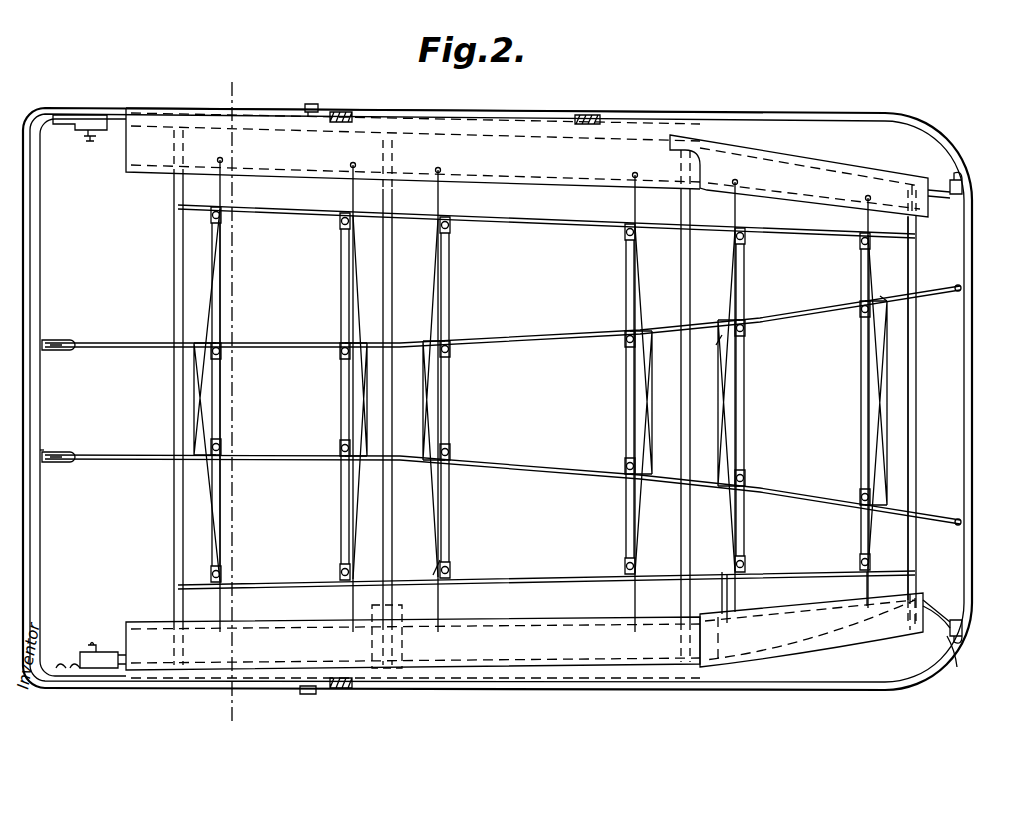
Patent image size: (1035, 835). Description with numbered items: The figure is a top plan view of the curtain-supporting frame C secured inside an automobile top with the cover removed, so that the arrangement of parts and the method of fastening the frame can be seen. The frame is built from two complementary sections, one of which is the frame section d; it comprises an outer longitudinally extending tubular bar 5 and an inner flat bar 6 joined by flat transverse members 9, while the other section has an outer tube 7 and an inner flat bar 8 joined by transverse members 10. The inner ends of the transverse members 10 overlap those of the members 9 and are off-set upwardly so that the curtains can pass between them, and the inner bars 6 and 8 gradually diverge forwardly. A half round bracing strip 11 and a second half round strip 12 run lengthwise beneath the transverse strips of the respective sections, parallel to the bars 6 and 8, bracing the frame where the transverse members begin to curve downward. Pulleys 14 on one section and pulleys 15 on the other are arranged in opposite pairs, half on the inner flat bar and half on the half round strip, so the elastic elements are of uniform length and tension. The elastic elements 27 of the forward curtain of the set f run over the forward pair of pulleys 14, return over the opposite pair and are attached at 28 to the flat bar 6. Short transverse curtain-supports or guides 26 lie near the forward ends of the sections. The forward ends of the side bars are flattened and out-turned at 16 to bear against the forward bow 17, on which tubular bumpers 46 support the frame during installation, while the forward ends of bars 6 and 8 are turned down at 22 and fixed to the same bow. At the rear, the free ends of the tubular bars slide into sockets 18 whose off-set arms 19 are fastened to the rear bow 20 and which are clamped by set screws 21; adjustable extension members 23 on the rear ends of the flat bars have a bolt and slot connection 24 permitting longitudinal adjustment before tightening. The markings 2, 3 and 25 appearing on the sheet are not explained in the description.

The frame top rail 2 is at (612, 150).
The section line 3 is at (262, 80).
The outer tubular bar 5 is at (866, 640).
The inner flat bar 6 is at (822, 312).
The outer tube 7 is at (940, 190).
The inner flat bar 8 is at (796, 500).
The transverse members 9 is at (174, 490).
The transverse members 10 is at (174, 296).
The half round bracing strip 11 is at (508, 584).
The half round bracing strip 12 is at (552, 222).
The pulleys 14 is at (450, 355).
The pulleys 15 is at (450, 230).
The out-turned bearing ends 16 is at (962, 170).
The forward bow 17 is at (966, 247).
The sockets 18 is at (96, 652).
The off-set arms 19 is at (68, 680).
The rear bow 20 is at (34, 243).
The set screws 21 is at (88, 648).
The turned-down ends 22 is at (955, 296).
The adjustable extension members 23 is at (44, 449).
The bolt and slot connection 24 is at (60, 350).
The rail end hook 25 is at (42, 459).
The curtain-supports or guides 26 is at (718, 600).
The elastic elements 27 is at (727, 592).
The attachment of elastic elements 28 is at (718, 335).
The tubular bumpers 46 is at (957, 662).
The curtain-supporting frame C is at (278, 350).
The frame section d is at (433, 570).
The set of curtains f is at (648, 664).